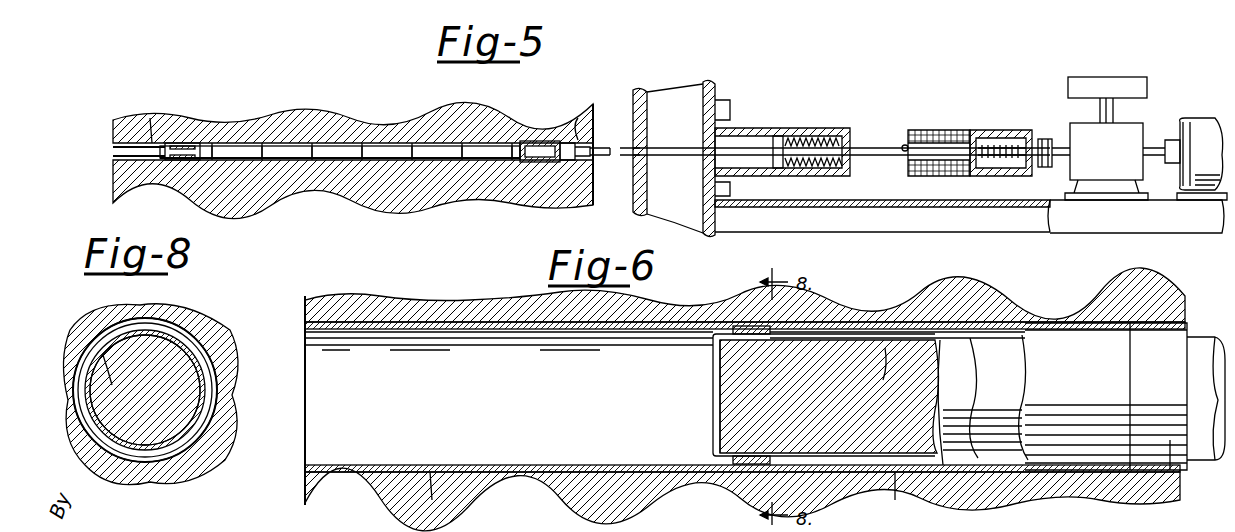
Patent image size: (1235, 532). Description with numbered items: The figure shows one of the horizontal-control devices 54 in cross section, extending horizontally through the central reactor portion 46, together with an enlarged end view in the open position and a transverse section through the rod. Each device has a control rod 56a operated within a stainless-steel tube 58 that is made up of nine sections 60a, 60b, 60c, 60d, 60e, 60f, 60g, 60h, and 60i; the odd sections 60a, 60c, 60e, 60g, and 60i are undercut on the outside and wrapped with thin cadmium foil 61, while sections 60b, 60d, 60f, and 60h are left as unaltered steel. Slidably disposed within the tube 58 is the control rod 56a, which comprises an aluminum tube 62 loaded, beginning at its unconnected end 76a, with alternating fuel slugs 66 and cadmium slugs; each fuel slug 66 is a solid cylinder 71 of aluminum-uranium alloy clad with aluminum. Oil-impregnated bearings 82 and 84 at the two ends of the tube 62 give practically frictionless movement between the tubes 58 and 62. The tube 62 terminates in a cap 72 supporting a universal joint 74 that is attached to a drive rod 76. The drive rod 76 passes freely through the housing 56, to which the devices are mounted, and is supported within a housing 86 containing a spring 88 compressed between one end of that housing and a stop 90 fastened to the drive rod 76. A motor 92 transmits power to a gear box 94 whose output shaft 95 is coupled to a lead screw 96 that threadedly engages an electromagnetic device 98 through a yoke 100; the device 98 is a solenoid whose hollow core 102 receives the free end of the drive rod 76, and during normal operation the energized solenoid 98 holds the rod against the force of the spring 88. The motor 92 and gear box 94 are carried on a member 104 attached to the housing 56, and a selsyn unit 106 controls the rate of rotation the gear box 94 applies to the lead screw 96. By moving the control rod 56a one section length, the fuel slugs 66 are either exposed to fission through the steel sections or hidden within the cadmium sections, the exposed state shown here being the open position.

In FIG. 5, the central reactor portion 46 is at (290, 118).
In FIG. 8, the central reactor portion 46 is at (222, 428).
In FIG. 6, the central reactor portion 46 is at (388, 305).
In FIG. 5, the horizontal-control device 54 is at (919, 70).
In FIG. 5, the housing 56 is at (650, 100).
In FIG. 5, the control rod 56a is at (540, 162).
In FIG. 6, the control rod 56a is at (945, 472).
In FIG. 5, the stainless-steel tube 58 is at (412, 165).
In FIG. 8, the stainless-steel tube 58 is at (195, 340).
In FIG. 6, the stainless-steel tube 58 is at (1096, 343).
In FIG. 5, the section 60a is at (150, 118).
In FIG. 6, the section 60a is at (430, 472).
In FIG. 5, the section 60b is at (212, 143).
In FIG. 6, the section 60b is at (895, 472).
In FIG. 5, the section 60c is at (262, 143).
In FIG. 6, the section 60c is at (1170, 440).
In FIG. 5, the section 60d is at (312, 143).
In FIG. 5, the section 60e is at (362, 143).
In FIG. 5, the section 60f is at (412, 143).
In FIG. 5, the section 60g is at (462, 143).
In FIG. 5, the section 60h is at (512, 143).
In FIG. 5, the section 60i is at (522, 143).
In FIG. 5, the cadmium foil 61 is at (150, 160).
In FIG. 6, the cadmium foil 61 is at (490, 322).
In FIG. 8, the tube 62 is at (198, 377).
In FIG. 6, the tube 62 is at (1000, 345).
In FIG. 8, the fuel slug 66 is at (179, 401).
In FIG. 6, the fuel slug 66 is at (731, 396).
In FIG. 8, the solid cylinder 71 is at (103, 355).
In FIG. 6, the solid cylinder 71 is at (885, 348).
In FIG. 5, the cap 72 is at (583, 162).
In FIG. 5, the universal joint 74 is at (585, 145).
In FIG. 5, the drive rod 76 is at (684, 156).
In FIG. 6, the unconnected end 76a is at (703, 426).
In FIG. 5, the oil-impregnated bearing 82 is at (182, 160).
In FIG. 6, the oil-impregnated bearing 82 is at (757, 464).
In FIG. 5, the oil-impregnated bearing 84 is at (578, 118).
In FIG. 5, the housing 86 is at (740, 128).
In FIG. 5, the spring 88 is at (808, 136).
In FIG. 5, the stop 90 is at (778, 168).
In FIG. 5, the motor 92 is at (1205, 122).
In FIG. 5, the gear box 94 is at (1130, 125).
In FIG. 5, the output shaft 95 is at (1060, 152).
In FIG. 5, the lead screw 96 is at (1008, 160).
In FIG. 5, the electromagnetic device 98 is at (925, 130).
In FIG. 5, the yoke 100 is at (985, 130).
In FIG. 5, the hollow core 102 is at (905, 146).
In FIG. 5, the member 104 is at (1118, 220).
In FIG. 5, the selsyn unit 106 is at (1112, 77).